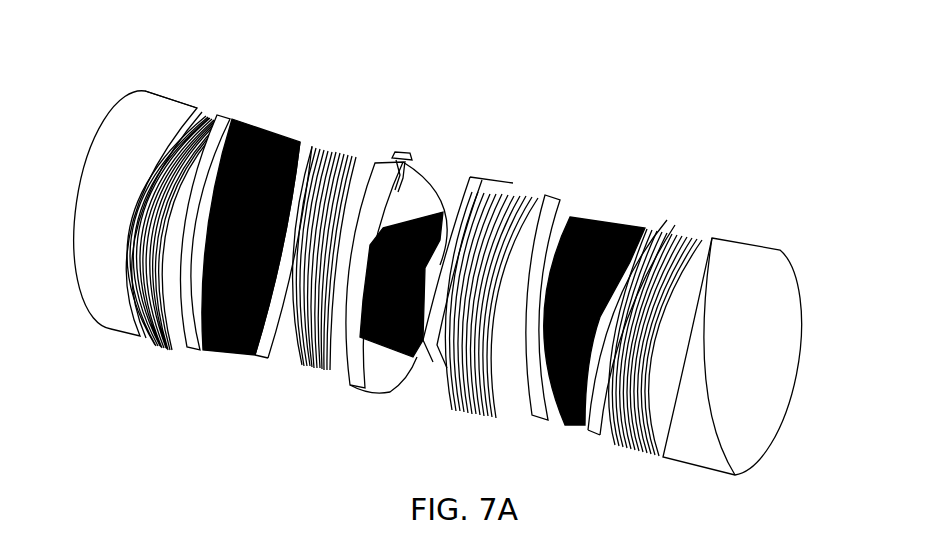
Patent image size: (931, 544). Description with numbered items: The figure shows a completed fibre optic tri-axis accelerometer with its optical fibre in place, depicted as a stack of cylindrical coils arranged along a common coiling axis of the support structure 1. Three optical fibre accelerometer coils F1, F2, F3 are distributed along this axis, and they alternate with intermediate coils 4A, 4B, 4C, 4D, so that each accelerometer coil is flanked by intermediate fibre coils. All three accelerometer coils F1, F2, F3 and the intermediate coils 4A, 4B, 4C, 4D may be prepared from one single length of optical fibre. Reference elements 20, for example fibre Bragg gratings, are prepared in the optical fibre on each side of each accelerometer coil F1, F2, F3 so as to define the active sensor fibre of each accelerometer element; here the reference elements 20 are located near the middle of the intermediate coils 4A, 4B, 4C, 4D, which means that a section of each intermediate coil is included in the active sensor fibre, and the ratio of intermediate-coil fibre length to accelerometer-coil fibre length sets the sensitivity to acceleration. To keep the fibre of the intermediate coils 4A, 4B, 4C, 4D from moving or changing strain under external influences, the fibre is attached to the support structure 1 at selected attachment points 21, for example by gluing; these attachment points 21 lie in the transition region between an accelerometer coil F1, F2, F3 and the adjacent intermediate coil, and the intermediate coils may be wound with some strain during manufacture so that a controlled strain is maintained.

The support structure 1 is at (168, 96).
The reference elements 20 is at (128, 296).
The intermediate coil 4A is at (217, 116).
The intermediate coil 4B is at (377, 158).
The intermediate coil 4C is at (541, 196).
The intermediate coil 4D is at (697, 232).
The attachment points 21 is at (408, 160).
The optical fibre accelerometer coil F1 is at (290, 134).
The optical fibre accelerometer coil F2 is at (413, 212).
The optical fibre accelerometer coil F3 is at (613, 222).